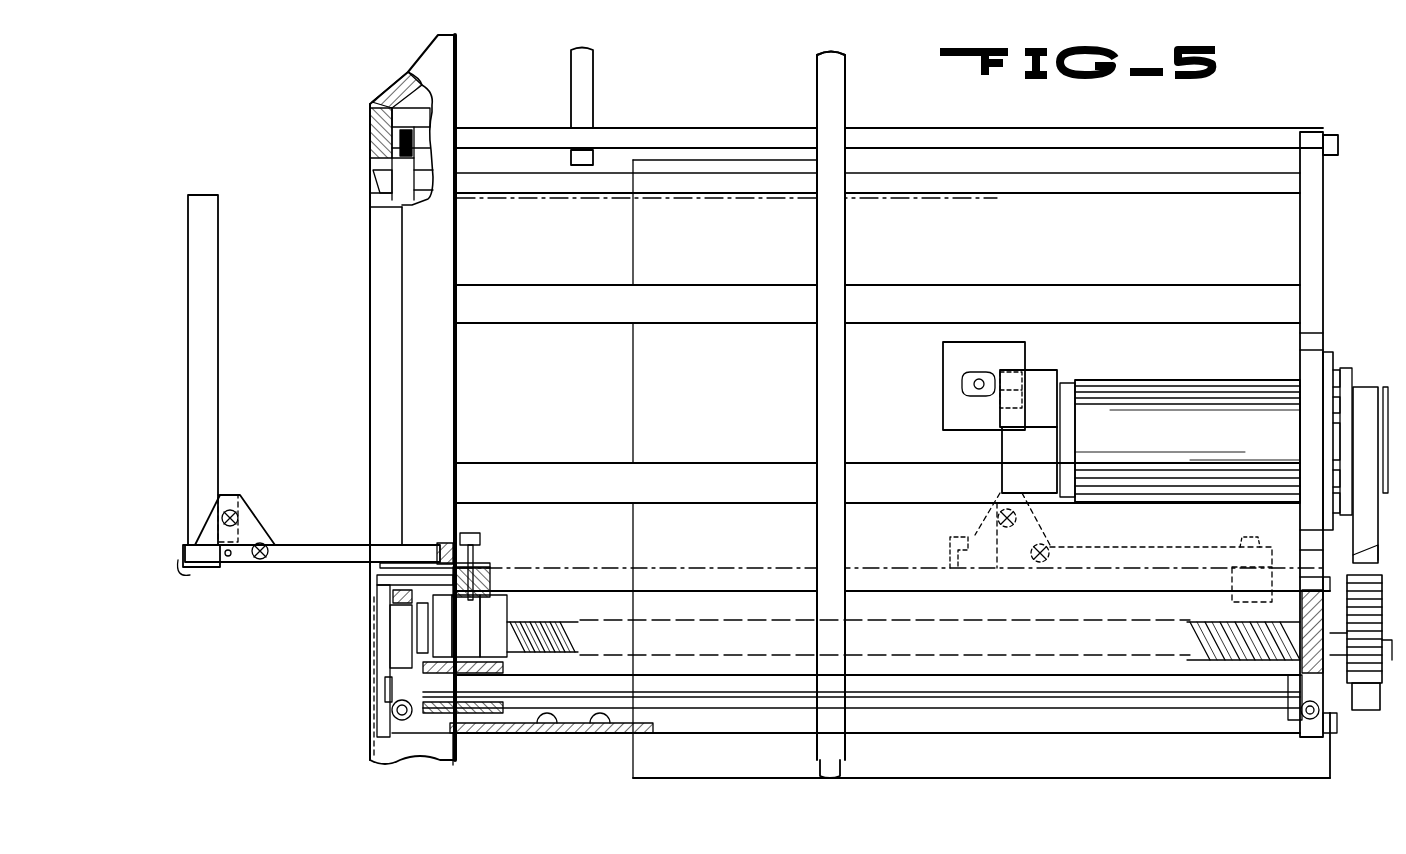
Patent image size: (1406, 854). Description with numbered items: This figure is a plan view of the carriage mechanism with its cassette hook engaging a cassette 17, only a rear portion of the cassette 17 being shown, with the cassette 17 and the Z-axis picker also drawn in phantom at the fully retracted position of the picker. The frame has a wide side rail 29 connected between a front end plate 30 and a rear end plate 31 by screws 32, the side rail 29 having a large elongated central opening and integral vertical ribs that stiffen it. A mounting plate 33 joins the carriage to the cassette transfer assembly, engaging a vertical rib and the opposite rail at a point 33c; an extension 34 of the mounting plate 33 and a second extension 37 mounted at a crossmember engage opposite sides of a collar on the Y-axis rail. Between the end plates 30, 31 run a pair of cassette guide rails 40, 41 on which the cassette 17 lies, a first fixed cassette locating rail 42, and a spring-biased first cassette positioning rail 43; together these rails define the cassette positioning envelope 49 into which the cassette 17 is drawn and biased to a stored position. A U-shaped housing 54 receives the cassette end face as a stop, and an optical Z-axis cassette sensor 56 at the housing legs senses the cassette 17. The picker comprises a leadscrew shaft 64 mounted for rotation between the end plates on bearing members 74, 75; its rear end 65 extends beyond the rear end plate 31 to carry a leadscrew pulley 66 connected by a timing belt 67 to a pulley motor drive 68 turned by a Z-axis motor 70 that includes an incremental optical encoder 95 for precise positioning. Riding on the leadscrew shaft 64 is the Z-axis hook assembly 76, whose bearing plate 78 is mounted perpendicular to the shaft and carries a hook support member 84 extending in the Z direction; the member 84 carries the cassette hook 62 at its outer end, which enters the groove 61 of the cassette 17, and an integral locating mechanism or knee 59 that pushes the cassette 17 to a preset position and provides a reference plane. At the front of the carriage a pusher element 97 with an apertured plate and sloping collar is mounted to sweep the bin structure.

The cassette 17 is at (215, 246).
The side rail 29 is at (490, 128).
The front end plate 30 is at (400, 163).
The rear end plate 31 is at (1315, 203).
The screws 32 is at (1338, 143).
The mounting plate 33 is at (850, 85).
The point 33c is at (845, 770).
The extension 34 is at (817, 68).
The second extension 37 is at (594, 70).
The cassette guide rail 40 is at (602, 320).
The cassette guide rail 41 is at (582, 499).
The first fixed cassette locating rail 42 is at (872, 578).
The first cassette positioning rail 43 is at (555, 180).
The cassette positioning envelope 49 is at (738, 407).
The U-shaped housing 54 is at (950, 415).
The optical Z-axis cassette sensor 56 is at (946, 379).
The locating mechanism 59 is at (230, 492).
The groove 61 is at (183, 566).
The cassette hook 62 is at (200, 563).
The leadscrew shaft 64 is at (545, 627).
The rear end 65 is at (1385, 660).
The leadscrew pulley 66 is at (1318, 610).
The timing belt 67 is at (1363, 527).
The pulley motor drive 68 is at (1388, 387).
The Z-axis motor 70 is at (1188, 454).
The bearing member 74 is at (400, 652).
The bearing member 75 is at (1298, 663).
The Z-axis hook assembly 76 is at (290, 578).
The bearing plate 78 is at (480, 600).
The hook support member 84 is at (318, 545).
The incremental optical encoder 95 is at (1046, 474).
The pusher element 97 is at (438, 40).